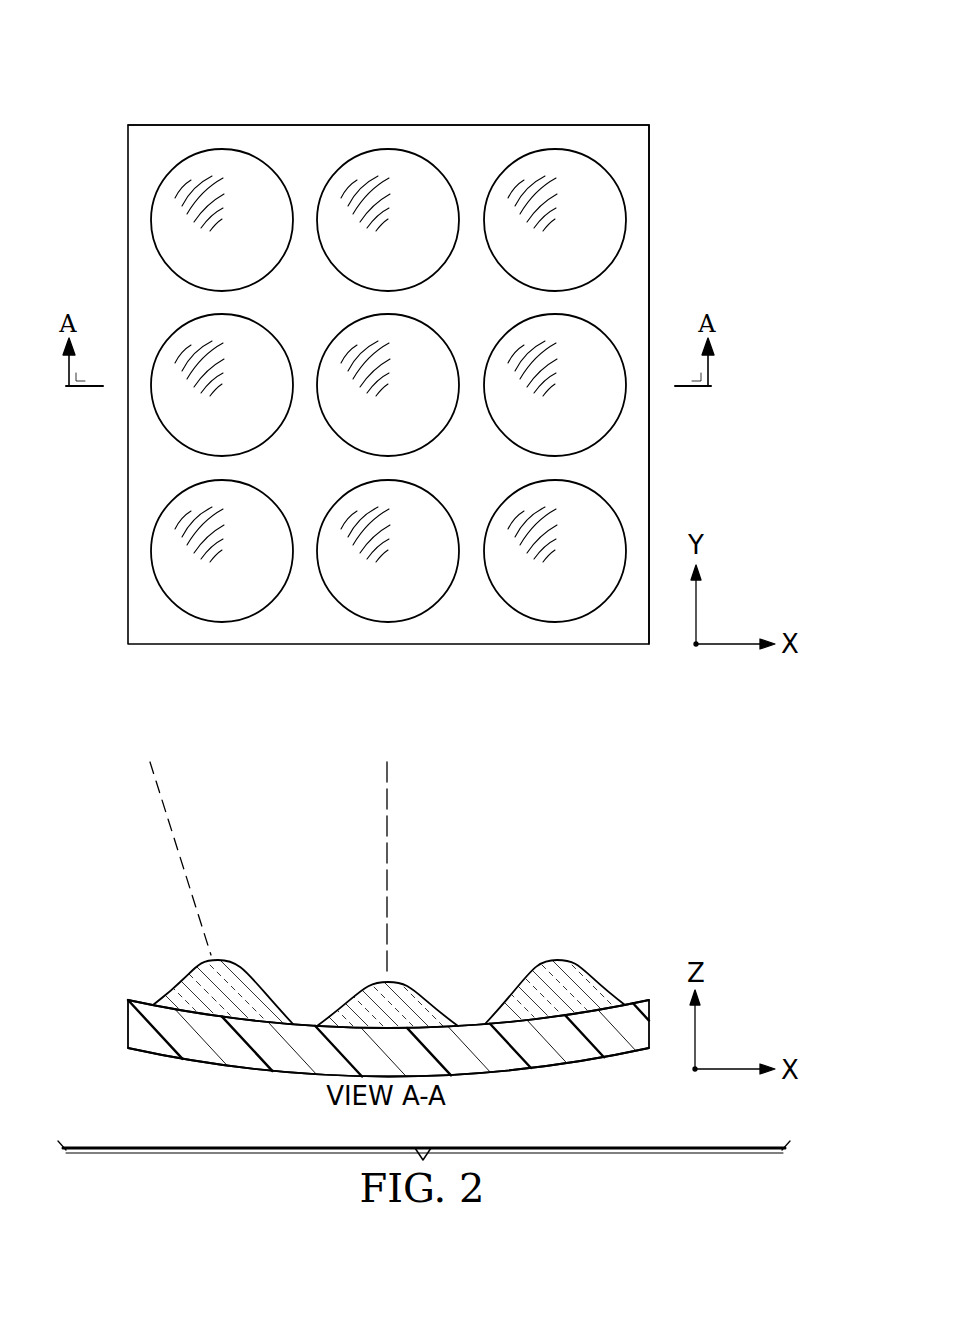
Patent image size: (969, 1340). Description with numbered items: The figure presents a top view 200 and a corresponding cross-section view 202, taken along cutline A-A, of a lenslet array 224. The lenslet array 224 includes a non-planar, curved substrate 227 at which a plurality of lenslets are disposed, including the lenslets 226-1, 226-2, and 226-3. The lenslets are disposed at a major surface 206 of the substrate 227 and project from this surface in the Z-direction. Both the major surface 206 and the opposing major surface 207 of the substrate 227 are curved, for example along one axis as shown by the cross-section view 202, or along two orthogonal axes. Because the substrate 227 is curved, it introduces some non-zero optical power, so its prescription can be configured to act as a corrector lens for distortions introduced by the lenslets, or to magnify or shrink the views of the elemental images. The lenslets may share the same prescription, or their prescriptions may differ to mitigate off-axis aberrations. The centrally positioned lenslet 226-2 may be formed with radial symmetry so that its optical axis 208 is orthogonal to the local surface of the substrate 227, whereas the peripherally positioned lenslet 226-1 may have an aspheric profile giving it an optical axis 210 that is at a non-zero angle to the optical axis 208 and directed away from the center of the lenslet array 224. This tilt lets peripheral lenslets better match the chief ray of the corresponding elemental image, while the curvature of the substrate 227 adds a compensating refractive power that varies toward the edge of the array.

The top view 200 is at (475, 73).
The cross-section view 202 is at (510, 787).
The major surface 206 is at (304, 135).
The opposing major surface 207 is at (210, 1064).
The optical axis 208 is at (386, 825).
The optical axis 210 is at (177, 848).
The lenslet array 224 is at (690, 214).
The lenslet 226-1 is at (275, 334).
The lenslet 226-2 is at (441, 334).
The lenslet 226-3 is at (635, 400).
The substrate 227 is at (650, 291).